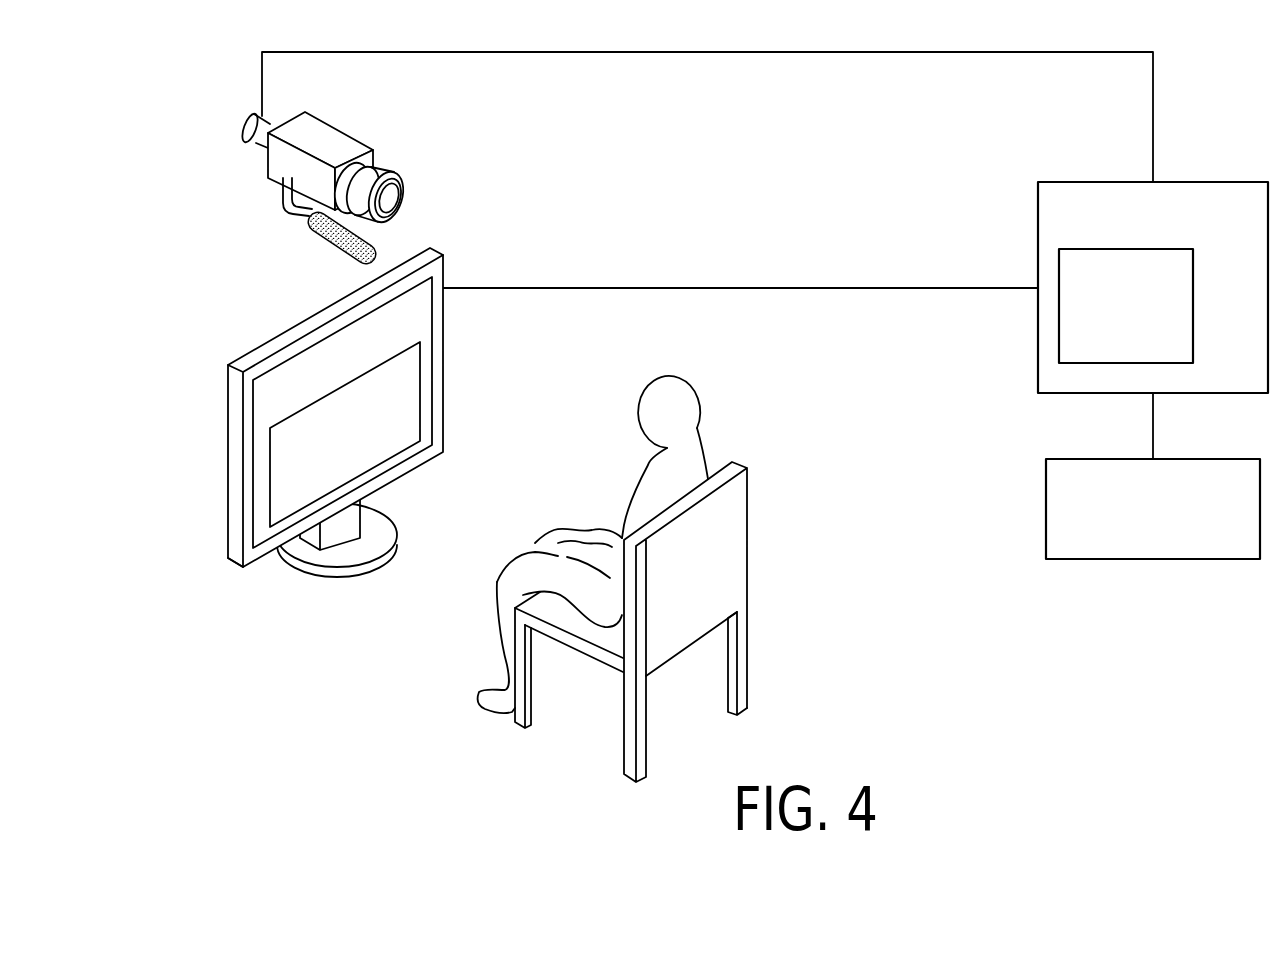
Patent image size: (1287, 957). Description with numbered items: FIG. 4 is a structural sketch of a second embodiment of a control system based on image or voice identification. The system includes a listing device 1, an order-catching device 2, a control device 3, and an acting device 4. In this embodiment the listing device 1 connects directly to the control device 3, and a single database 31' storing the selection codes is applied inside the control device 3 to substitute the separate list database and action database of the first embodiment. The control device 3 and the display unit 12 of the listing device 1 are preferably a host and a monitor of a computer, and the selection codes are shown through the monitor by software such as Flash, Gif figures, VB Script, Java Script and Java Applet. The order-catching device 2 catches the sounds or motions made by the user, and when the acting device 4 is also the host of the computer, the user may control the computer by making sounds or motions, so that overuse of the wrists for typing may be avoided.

The listing device 1 is at (280, 404).
The display unit 12 is at (282, 442).
The order-catching device 2 is at (290, 161).
The control device 3 is at (1106, 240).
The database 31' is at (1059, 306).
The acting device 4 is at (1058, 505).